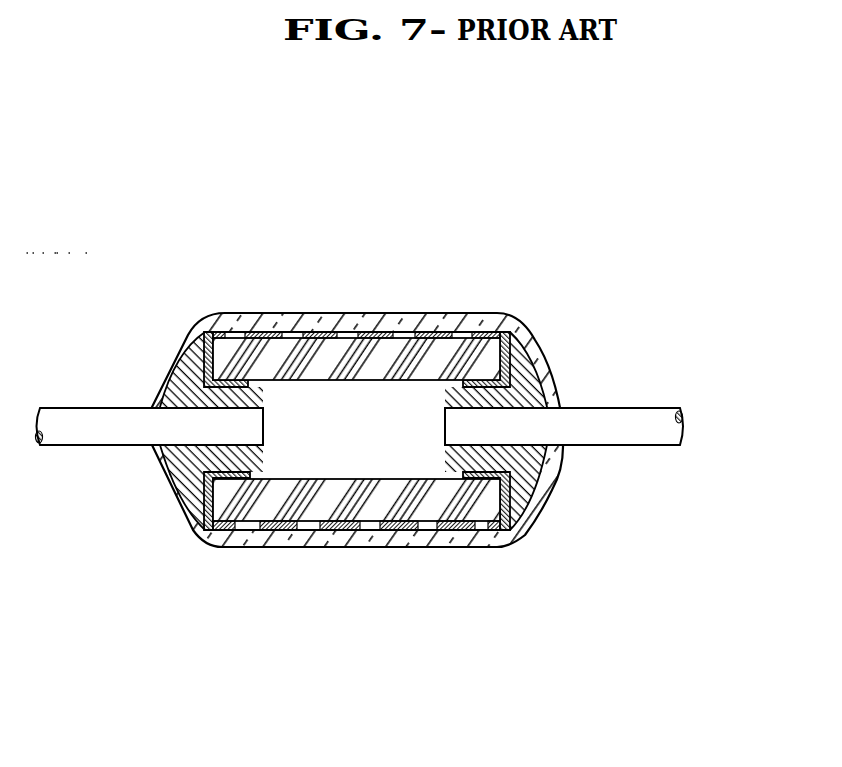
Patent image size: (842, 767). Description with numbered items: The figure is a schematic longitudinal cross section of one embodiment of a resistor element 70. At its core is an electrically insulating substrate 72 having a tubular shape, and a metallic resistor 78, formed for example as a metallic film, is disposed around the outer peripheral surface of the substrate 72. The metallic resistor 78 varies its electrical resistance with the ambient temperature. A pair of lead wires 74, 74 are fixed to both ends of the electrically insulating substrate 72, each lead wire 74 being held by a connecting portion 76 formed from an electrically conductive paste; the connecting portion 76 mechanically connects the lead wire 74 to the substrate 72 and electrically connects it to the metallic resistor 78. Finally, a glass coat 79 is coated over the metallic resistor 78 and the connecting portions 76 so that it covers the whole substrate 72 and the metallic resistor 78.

The resistor element 70 is at (375, 392).
The electrically insulating substrate 72 is at (348, 350).
The lead wire 74 is at (112, 422).
The connecting portion 76 is at (540, 363).
The metallic resistor 78 is at (263, 338).
The glass coat 79 is at (470, 328).